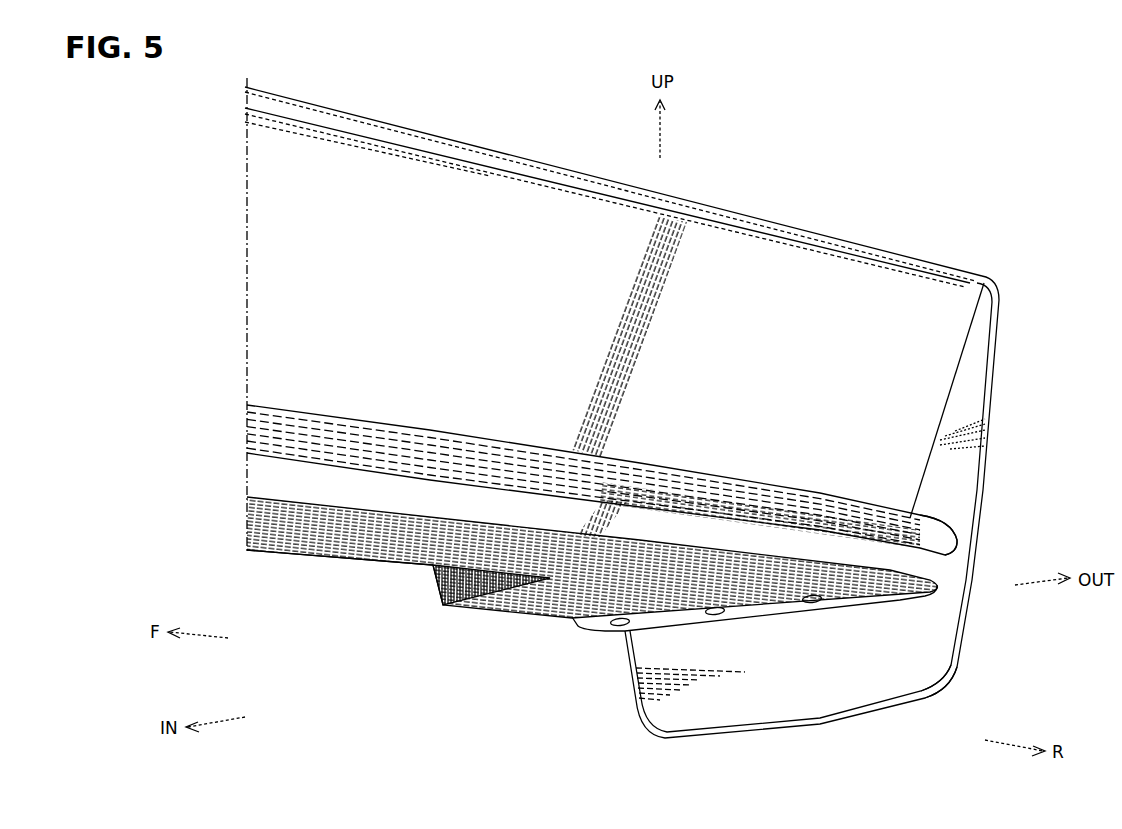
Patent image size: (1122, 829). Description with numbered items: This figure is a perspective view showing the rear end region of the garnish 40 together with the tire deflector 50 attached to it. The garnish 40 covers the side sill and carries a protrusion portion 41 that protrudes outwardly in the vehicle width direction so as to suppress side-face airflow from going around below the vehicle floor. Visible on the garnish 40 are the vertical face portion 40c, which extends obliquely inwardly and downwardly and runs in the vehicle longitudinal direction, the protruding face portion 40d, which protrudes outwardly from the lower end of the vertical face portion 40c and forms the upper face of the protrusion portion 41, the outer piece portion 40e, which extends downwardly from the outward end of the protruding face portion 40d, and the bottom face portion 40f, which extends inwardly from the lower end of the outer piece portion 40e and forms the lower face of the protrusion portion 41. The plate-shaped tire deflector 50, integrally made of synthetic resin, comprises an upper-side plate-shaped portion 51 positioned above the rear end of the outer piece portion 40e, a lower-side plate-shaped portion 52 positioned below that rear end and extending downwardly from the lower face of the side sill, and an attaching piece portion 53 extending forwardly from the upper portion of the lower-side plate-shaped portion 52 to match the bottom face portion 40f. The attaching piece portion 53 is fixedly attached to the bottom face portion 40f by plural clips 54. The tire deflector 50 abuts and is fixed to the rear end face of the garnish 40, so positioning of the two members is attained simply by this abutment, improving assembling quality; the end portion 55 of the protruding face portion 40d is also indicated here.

The garnish 40 is at (739, 212).
The vertical face portion 40c is at (400, 278).
The protruding face portion 40d is at (382, 446).
The outer piece portion 40e is at (393, 493).
The bottom face portion 40f is at (306, 552).
The protrusion portion 41 is at (240, 472).
The tire deflector 50 is at (990, 484).
The upper-side plate-shaped portion 51 is at (990, 337).
The lower-side plate-shaped portion 52 is at (808, 685).
The attaching piece portion 53 is at (775, 603).
The clips 54 is at (612, 628).
The end portion 55 is at (933, 528).